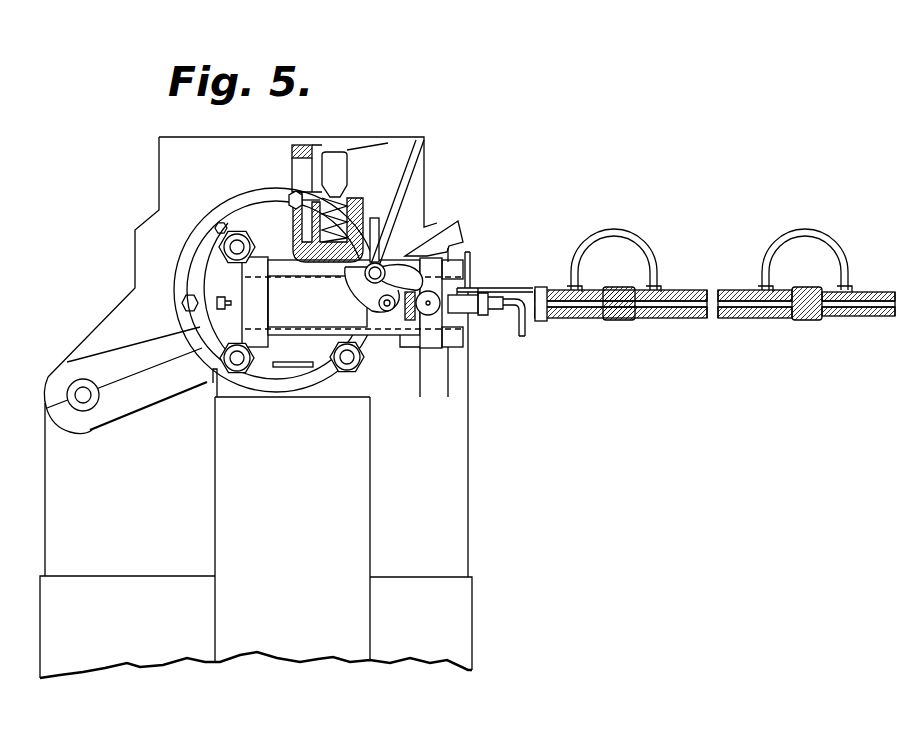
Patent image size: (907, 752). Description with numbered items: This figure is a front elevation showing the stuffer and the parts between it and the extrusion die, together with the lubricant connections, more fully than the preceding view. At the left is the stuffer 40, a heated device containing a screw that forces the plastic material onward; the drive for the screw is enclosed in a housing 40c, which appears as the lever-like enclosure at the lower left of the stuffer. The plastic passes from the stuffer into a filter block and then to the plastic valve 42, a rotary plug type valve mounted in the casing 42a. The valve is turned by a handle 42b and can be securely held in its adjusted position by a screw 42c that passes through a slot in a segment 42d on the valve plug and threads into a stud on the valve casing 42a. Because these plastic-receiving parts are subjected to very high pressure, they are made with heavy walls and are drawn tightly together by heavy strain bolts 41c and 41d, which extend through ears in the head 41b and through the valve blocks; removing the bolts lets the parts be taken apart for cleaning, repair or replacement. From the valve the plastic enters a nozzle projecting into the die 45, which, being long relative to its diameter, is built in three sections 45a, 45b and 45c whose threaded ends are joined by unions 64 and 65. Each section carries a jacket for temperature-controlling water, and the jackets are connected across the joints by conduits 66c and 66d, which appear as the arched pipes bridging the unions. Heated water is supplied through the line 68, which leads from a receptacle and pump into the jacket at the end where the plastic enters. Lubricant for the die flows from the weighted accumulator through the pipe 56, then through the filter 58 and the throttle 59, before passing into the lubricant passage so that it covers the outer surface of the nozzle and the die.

The stuffer 40 is at (240, 289).
The housing 40c is at (100, 335).
The head 41b is at (215, 383).
The strain bolt 41c is at (282, 268).
The strain bolt 41d is at (288, 336).
The plastic valve 42 is at (387, 311).
The casing of the plastic valve 42a is at (402, 336).
The handle 42b is at (317, 301).
The screw 42c is at (380, 260).
The segment 42d is at (407, 254).
The die 45 is at (597, 318).
The die section 45a is at (542, 292).
The die section 45b is at (743, 318).
The die section 45c is at (867, 317).
The pipe 56 is at (527, 334).
The filter 58 is at (466, 307).
The throttle 59 is at (428, 315).
The union 64 is at (610, 288).
The union 65 is at (803, 288).
The conduit 66c is at (633, 220).
The conduit 66d is at (830, 220).
The line 68 is at (471, 260).